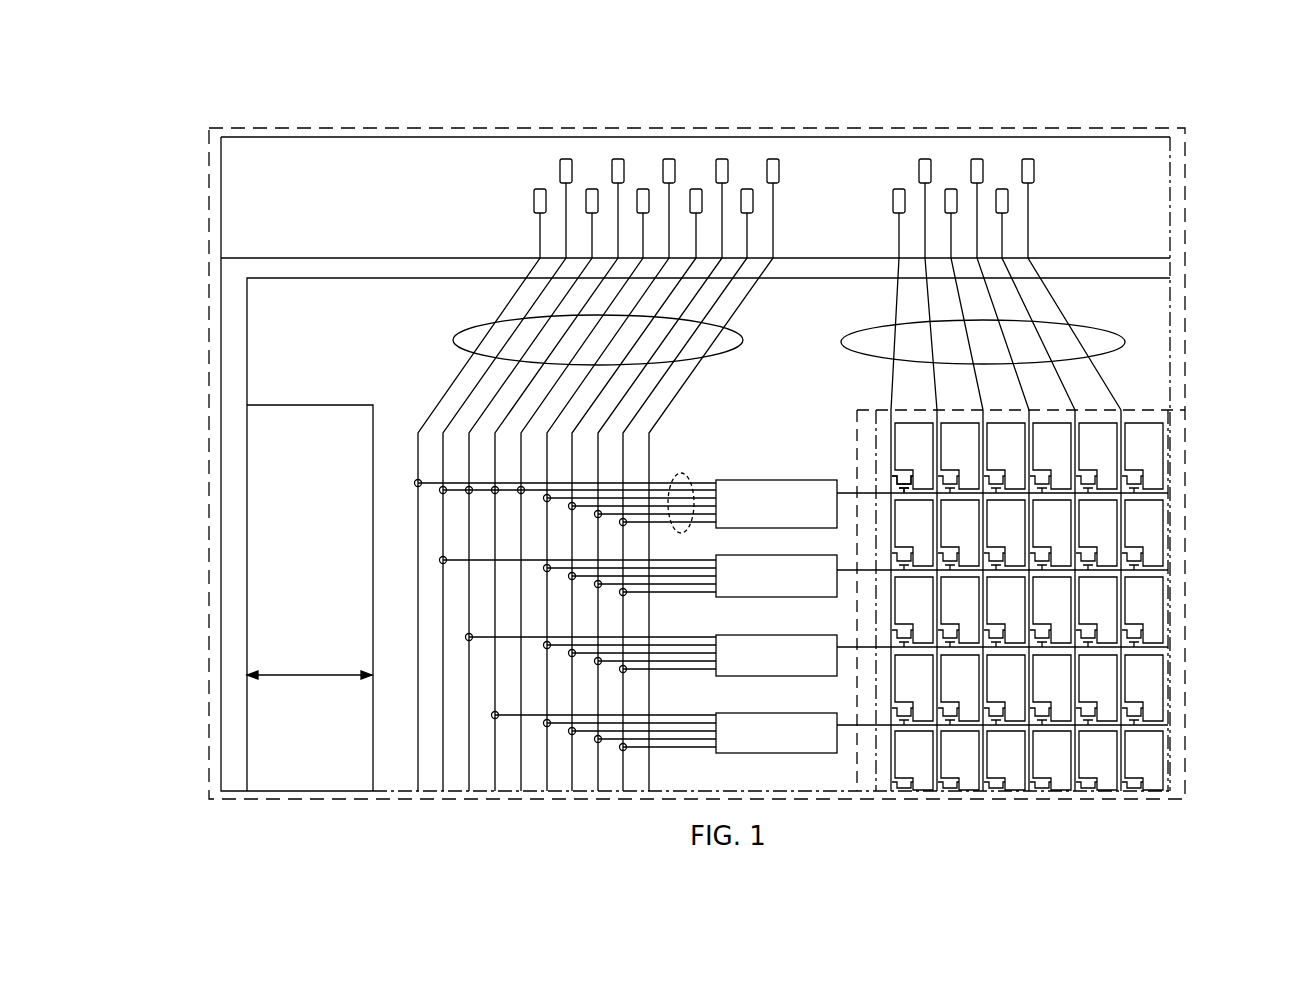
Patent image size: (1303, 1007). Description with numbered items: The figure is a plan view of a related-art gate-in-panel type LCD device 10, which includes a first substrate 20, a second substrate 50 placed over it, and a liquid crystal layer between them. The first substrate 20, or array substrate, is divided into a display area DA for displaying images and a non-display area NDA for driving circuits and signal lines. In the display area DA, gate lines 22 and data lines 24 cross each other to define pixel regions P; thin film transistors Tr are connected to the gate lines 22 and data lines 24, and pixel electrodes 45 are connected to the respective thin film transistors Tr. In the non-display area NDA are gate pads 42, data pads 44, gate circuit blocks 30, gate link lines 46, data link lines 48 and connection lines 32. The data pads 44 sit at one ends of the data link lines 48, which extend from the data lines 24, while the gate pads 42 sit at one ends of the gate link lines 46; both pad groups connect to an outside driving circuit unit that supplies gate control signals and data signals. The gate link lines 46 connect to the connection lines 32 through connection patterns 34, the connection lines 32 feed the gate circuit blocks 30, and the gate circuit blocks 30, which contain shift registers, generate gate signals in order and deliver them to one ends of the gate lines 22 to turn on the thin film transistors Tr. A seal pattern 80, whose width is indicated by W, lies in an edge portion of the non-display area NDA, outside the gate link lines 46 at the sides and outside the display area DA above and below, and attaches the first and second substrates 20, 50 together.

The GIP type LCD device 10 is at (1130, 118).
The first substrate 20 is at (840, 132).
The gate lines 22 is at (855, 660).
The data lines 24 is at (1150, 430).
The gate circuit blocks 30 is at (760, 478).
The connection lines 32 is at (680, 474).
The connection patterns 34 is at (415, 481).
The gate pads 42 is at (775, 124).
The data pads 44 is at (1047, 92).
The pixel electrodes 45 is at (911, 400).
The gate link lines 46 is at (457, 325).
The data link lines 48 is at (1092, 318).
The second substrate 50 is at (465, 255).
The seal pattern 80 is at (270, 722).
The pixel regions P is at (1160, 471).
The thin film transistors Tr is at (885, 478).
The display area DA is at (1186, 628).
The non-display area NDA is at (1186, 268).
The width W is at (309, 667).